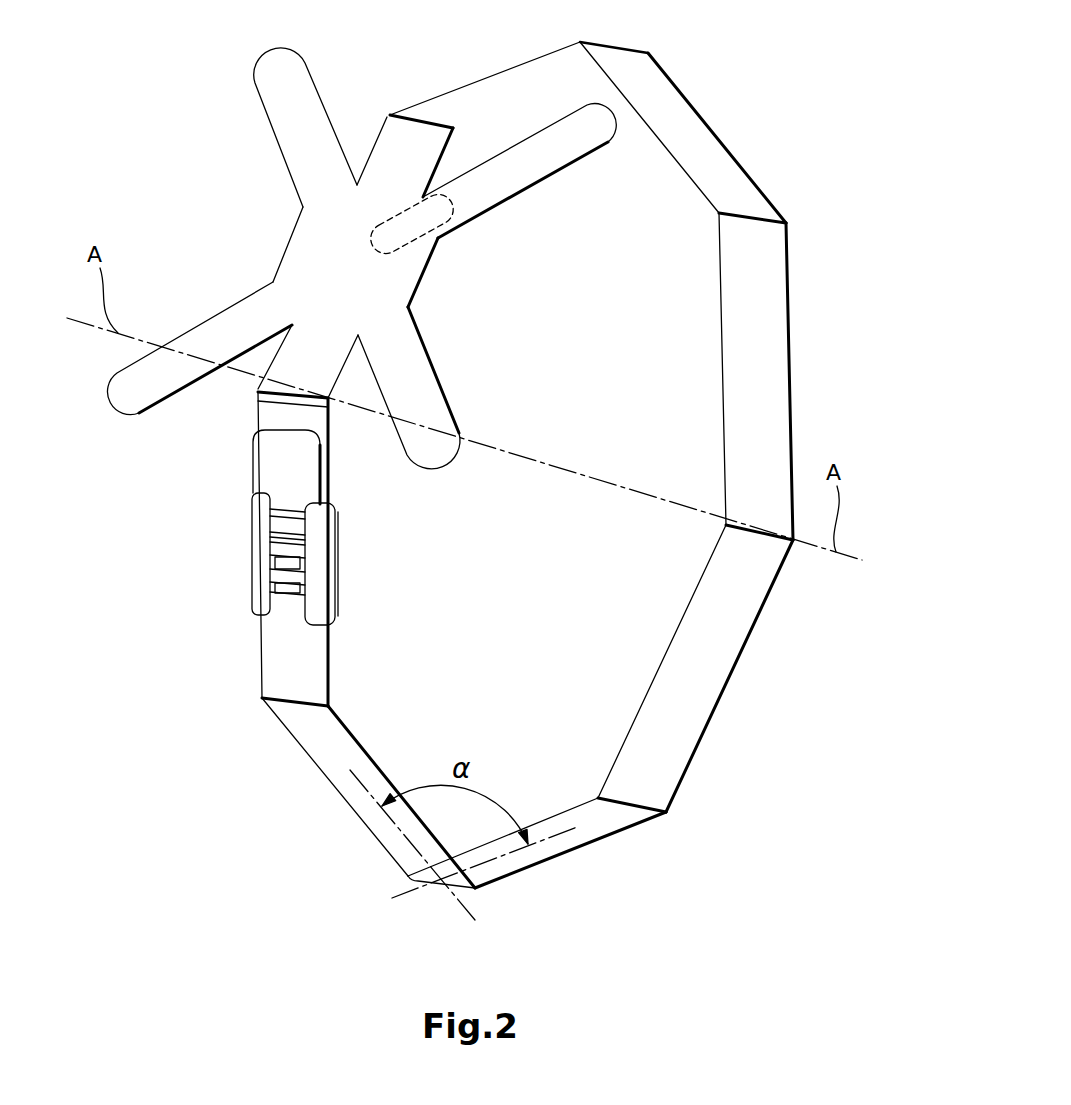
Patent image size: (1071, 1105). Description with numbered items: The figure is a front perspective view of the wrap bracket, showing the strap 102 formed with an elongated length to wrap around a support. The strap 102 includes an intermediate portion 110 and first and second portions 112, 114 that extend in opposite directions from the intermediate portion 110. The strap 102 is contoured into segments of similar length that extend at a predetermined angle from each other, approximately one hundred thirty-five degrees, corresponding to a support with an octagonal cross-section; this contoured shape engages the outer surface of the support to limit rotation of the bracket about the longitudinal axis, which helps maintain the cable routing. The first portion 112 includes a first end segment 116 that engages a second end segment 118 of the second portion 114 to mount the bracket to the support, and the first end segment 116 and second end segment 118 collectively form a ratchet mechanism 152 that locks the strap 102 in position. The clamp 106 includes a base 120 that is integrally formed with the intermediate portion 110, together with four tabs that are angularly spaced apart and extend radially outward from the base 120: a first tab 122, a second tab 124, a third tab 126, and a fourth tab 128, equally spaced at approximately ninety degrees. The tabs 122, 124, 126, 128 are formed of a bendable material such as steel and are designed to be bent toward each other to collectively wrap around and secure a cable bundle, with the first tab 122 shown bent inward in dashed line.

The strap 102 is at (705, 82).
The clamp 106 is at (205, 252).
The intermediate portion 110 is at (428, 254).
The first portion 112 is at (794, 382).
The second portion 114 is at (258, 400).
The first end segment 116 is at (266, 465).
The second end segment 118 is at (335, 563).
The base 120 is at (327, 253).
The first tab 122 is at (520, 165).
The second tab 124 is at (420, 379).
The third tab 126 is at (120, 402).
The fourth tab 128 is at (278, 117).
The ratchet mechanism 152 is at (233, 636).